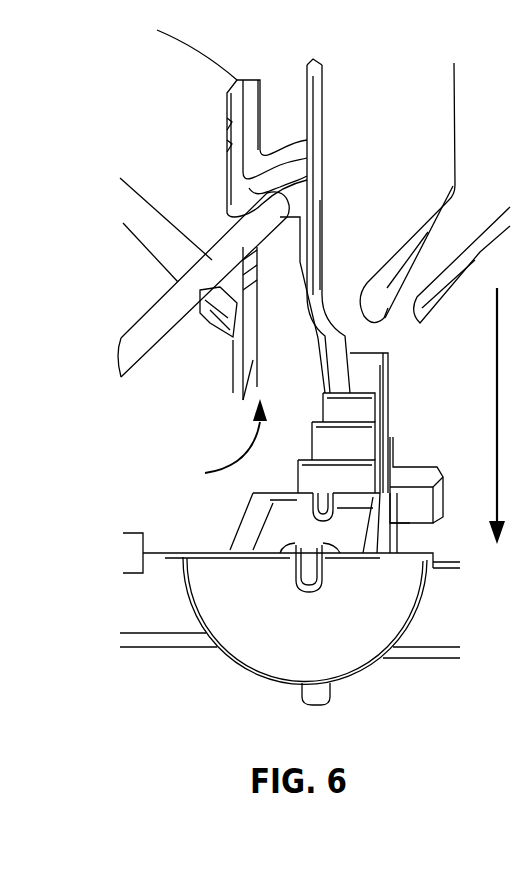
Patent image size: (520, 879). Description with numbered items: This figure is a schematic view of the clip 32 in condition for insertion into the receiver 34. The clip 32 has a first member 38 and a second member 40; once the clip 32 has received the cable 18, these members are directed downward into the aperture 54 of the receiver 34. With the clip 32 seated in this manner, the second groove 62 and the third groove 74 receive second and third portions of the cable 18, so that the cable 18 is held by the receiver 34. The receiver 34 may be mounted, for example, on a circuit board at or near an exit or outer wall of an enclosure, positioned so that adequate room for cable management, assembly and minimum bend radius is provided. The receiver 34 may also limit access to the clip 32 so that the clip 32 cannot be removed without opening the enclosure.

The cable 18 is at (150, 306).
The clip 32 is at (213, 442).
The receiver 34 is at (313, 642).
The first member 38 is at (258, 297).
The second member 40 is at (303, 257).
The aperture 54 is at (297, 527).
The second groove 62 is at (307, 567).
The third groove 74 is at (318, 512).